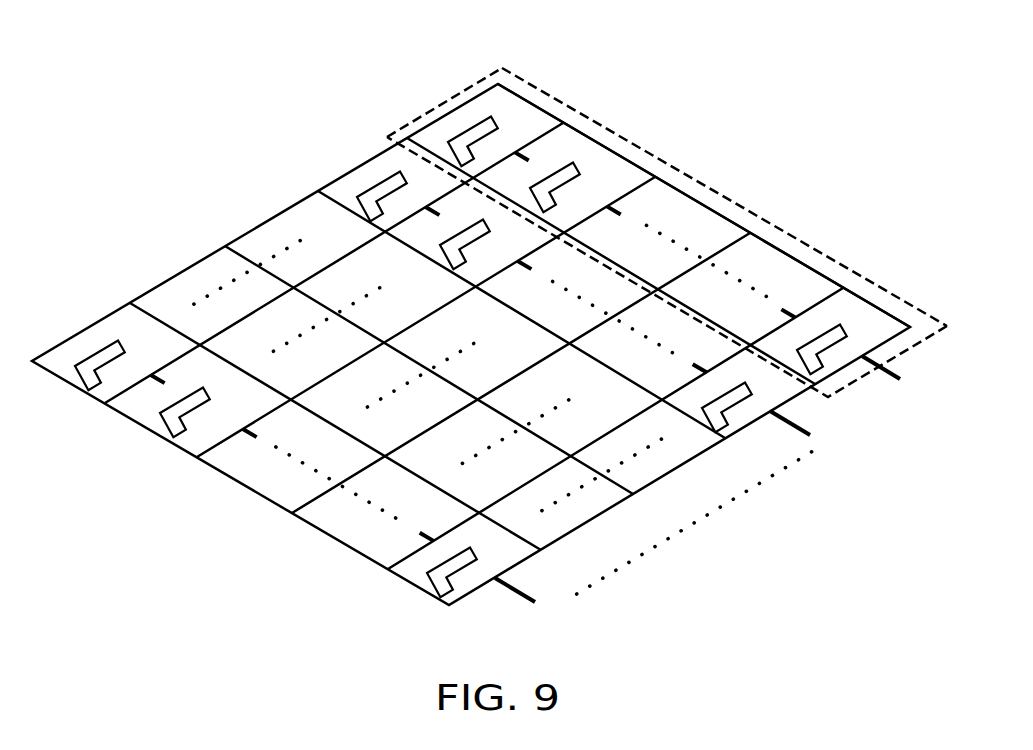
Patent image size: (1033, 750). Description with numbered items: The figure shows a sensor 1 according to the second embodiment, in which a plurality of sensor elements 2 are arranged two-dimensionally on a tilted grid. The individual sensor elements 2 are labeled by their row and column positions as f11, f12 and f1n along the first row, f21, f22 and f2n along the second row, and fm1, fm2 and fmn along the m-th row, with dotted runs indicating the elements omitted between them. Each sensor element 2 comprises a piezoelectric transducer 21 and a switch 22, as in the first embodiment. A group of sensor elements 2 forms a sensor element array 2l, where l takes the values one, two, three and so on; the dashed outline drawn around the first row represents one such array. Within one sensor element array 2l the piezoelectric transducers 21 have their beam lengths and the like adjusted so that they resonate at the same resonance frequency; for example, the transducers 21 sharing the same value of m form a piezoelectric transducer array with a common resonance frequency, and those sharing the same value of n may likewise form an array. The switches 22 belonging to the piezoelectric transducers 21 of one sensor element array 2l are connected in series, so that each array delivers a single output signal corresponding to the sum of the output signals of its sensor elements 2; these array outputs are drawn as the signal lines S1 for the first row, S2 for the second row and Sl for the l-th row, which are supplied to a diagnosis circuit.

The sensor 1 is at (652, 90).
The sensor element 2 is at (667, 212).
The piezoelectric transducer 21 is at (436, 117).
The switch 22 is at (537, 104).
The sensor element array 2l is at (768, 217).
The output signal S1 is at (896, 377).
The second scan line S2 is at (805, 434).
The output signal Sl is at (529, 599).
The sensor cell (1,1) f11 is at (479, 129).
The sensor cell (1,2) f12 is at (555, 172).
The sensor cell (1,n) f1n is at (826, 336).
The sensor cell (2,1) f21 is at (383, 185).
The sensor cell (2,2) f22 is at (465, 233).
The sensor cell (2,n) f2n is at (730, 393).
The sensor cell (m,1) fm1 is at (110, 352).
The sensor cell (m,2) fm2 is at (185, 396).
The sensor cell (m,n) fmn is at (459, 559).